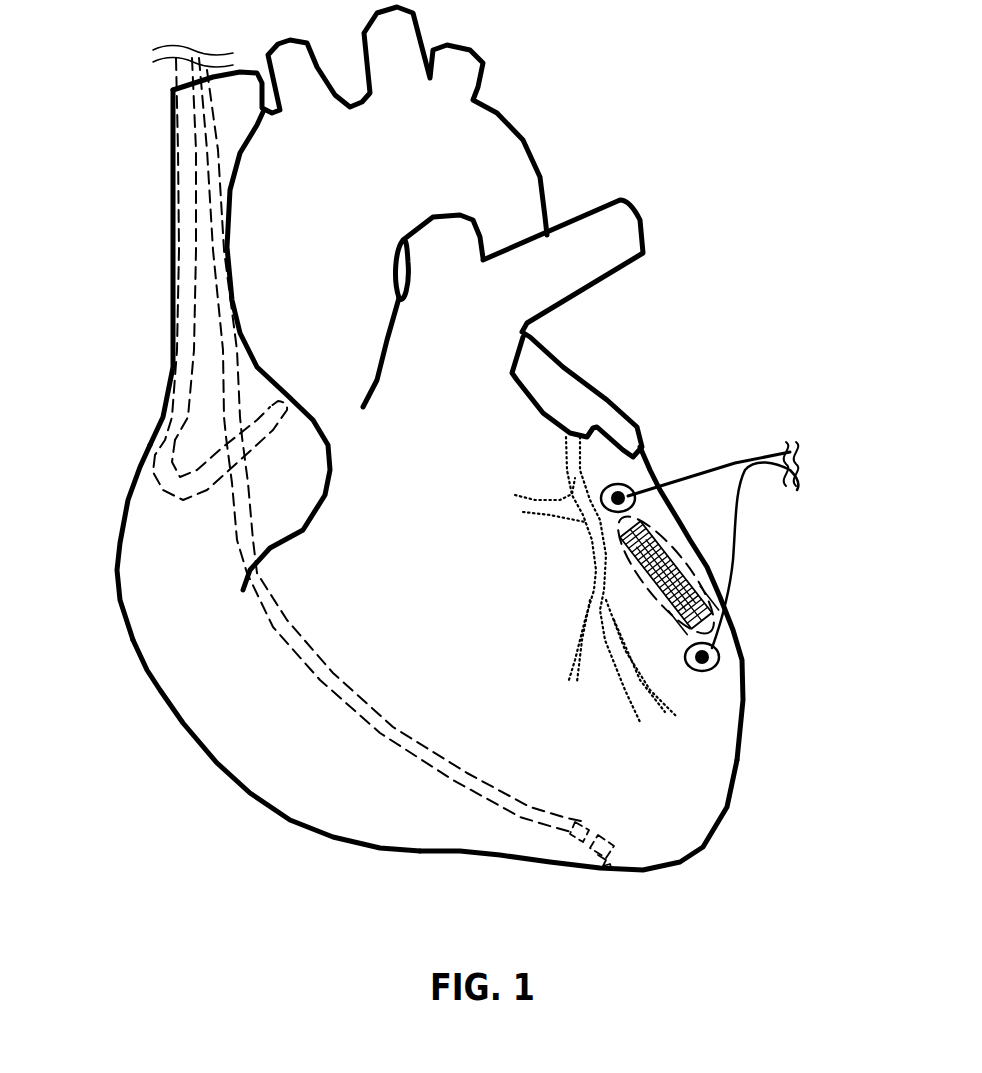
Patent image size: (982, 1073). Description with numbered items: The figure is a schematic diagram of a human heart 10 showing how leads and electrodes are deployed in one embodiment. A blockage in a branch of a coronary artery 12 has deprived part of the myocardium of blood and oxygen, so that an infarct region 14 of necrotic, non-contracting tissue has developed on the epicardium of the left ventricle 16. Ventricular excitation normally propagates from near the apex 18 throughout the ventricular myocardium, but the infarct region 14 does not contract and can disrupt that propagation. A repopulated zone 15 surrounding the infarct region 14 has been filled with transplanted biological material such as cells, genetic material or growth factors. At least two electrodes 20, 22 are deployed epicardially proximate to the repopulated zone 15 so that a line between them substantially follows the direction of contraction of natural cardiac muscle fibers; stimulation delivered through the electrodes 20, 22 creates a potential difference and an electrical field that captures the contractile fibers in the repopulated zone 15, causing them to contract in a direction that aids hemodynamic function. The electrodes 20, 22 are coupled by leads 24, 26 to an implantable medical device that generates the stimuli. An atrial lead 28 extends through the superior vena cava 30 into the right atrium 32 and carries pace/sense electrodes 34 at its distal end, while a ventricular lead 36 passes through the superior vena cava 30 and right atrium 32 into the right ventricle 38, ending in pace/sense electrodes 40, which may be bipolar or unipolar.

The heart 10 is at (293, 823).
The coronary artery 12 is at (593, 577).
The infarct region 14 is at (680, 577).
The repopulated zone 15 is at (703, 610).
The left ventricle 16 is at (719, 707).
The apex 18 is at (743, 828).
The electrode 20 is at (719, 650).
The electrode 22 is at (630, 487).
The lead 24 is at (805, 490).
The lead 26 is at (737, 458).
The atrial lead 28 is at (183, 300).
The superior vena cava 30 is at (177, 118).
The right atrium 32 is at (148, 504).
The pace/sense electrodes 34 is at (272, 402).
The ventricular lead 36 is at (450, 787).
The right ventricle 38 is at (224, 722).
The pace/sense electrodes 40 is at (637, 867).